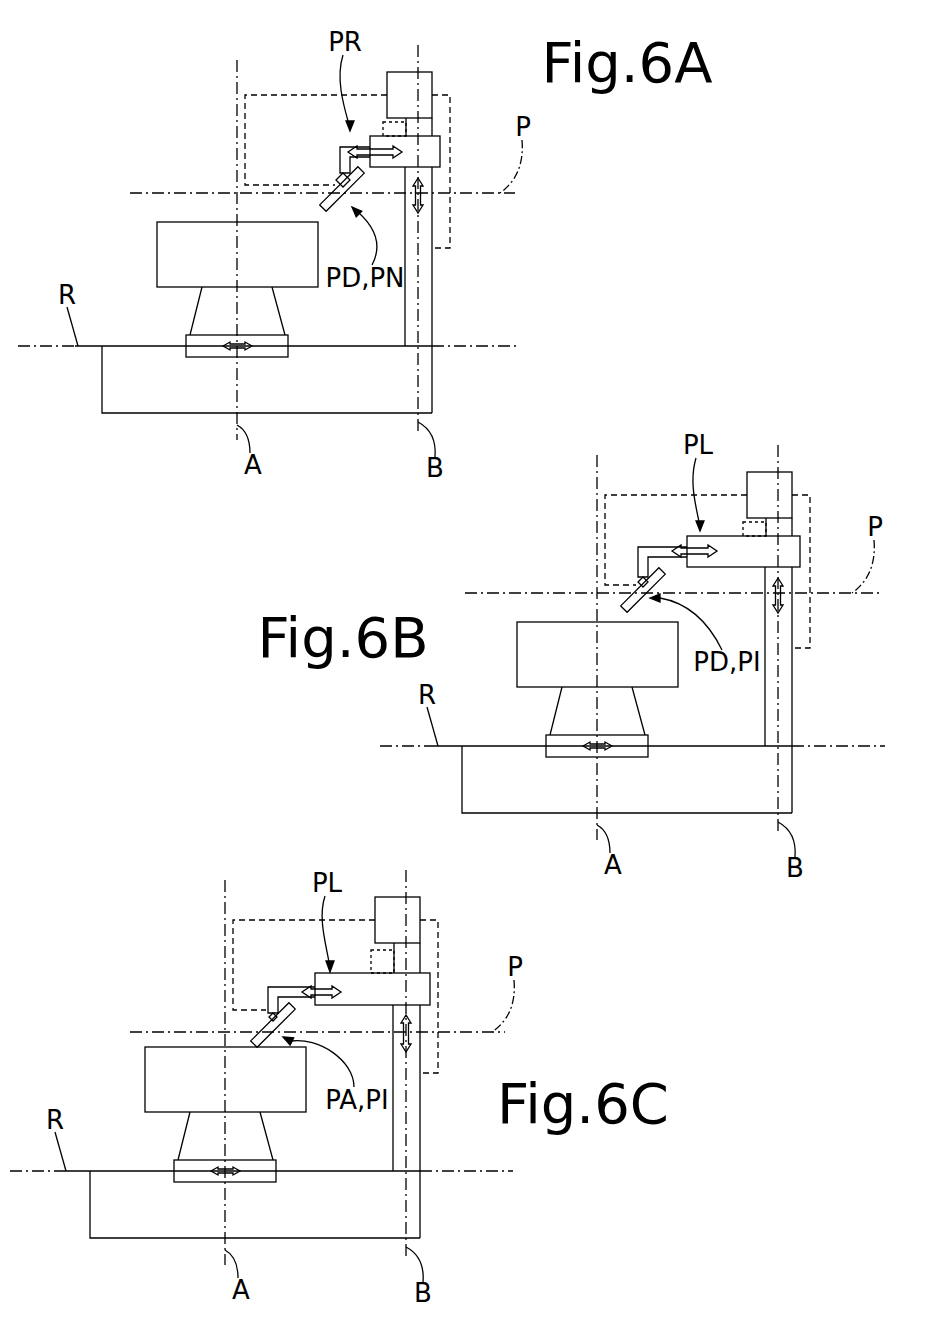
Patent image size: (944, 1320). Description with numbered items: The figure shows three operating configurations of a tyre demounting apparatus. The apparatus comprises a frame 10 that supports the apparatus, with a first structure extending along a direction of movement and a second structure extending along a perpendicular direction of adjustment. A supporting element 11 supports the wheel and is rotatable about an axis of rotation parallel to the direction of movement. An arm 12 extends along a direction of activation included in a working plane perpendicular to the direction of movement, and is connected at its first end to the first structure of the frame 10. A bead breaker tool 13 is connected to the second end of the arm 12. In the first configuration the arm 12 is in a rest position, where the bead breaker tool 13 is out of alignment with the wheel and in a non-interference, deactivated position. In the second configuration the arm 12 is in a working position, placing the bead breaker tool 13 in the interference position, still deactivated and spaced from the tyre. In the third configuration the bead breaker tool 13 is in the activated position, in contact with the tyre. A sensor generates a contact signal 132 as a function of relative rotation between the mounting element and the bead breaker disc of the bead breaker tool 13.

In FIG. 6A, the frame 10 is at (147, 390).
In FIG. 6B, the frame 10 is at (627, 804).
In FIG. 6C, the frame 10 is at (255, 1229).
In FIG. 6A, the supporting element 11 is at (263, 313).
In FIG. 6B, the supporting element 11 is at (609, 689).
In FIG. 6C, the supporting element 11 is at (237, 1114).
In FIG. 6A, the arm 12 is at (432, 145).
In FIG. 6B, the arm 12 is at (772, 642).
In FIG. 6C, the arm 12 is at (401, 1067).
In FIG. 6A, the bead breaker tool 13 is at (325, 205).
In FIG. 6B, the bead breaker tool 13 is at (637, 576).
In FIG. 6C, the bead breaker tool 13 is at (263, 1012).
In FIG. 6A, the contact signal 132 is at (264, 95).
In FIG. 6B, the contact signal 132 is at (699, 529).
In FIG. 6C, the contact signal 132 is at (328, 954).